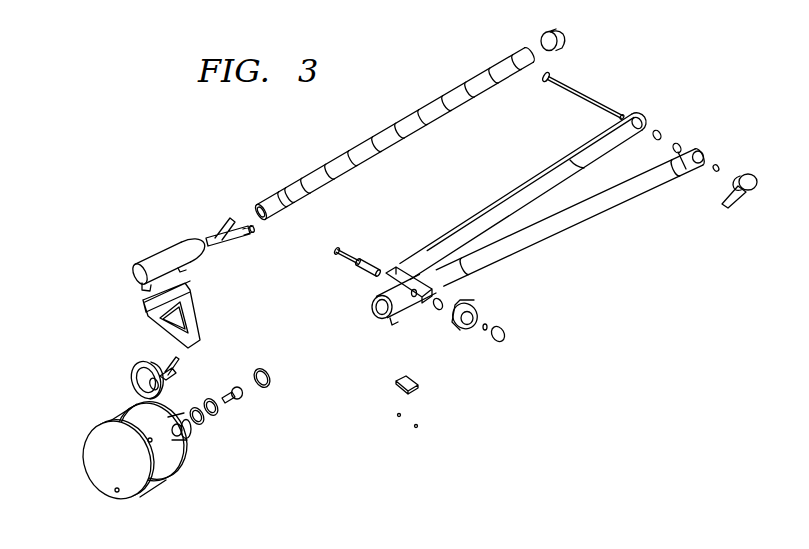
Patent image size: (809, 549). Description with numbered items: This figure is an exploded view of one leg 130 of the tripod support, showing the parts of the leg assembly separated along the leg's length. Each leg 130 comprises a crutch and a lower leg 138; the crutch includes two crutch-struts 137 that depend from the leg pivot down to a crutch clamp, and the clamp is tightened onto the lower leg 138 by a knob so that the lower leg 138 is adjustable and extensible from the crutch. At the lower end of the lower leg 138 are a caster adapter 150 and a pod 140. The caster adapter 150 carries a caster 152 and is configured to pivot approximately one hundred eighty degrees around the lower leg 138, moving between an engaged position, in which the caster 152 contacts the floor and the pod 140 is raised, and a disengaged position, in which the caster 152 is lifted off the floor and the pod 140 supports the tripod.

The leg 130 is at (40, 280).
The crutch-strut 137 is at (580, 223).
The lower leg 138 is at (384, 151).
The pod 140 is at (297, 437).
The caster adapter 150 is at (137, 248).
The caster 152 is at (130, 375).